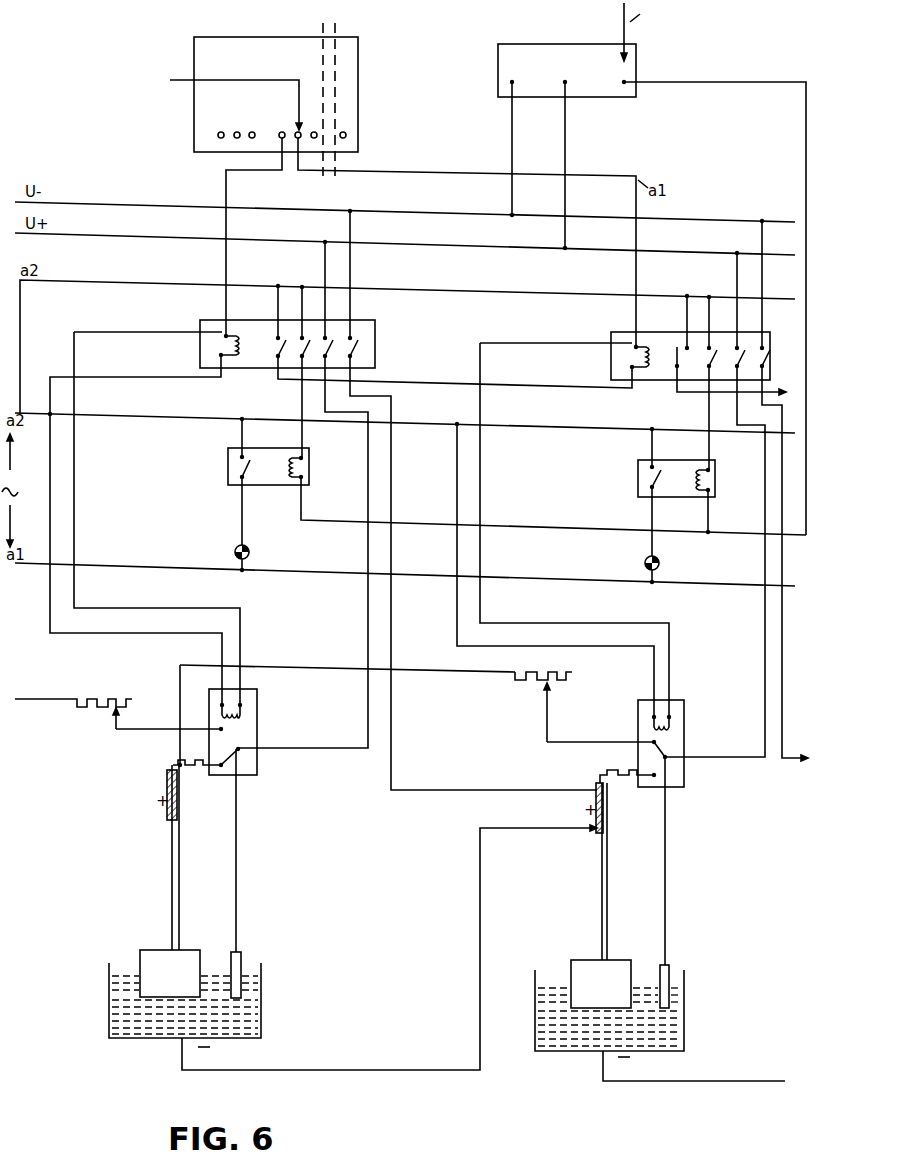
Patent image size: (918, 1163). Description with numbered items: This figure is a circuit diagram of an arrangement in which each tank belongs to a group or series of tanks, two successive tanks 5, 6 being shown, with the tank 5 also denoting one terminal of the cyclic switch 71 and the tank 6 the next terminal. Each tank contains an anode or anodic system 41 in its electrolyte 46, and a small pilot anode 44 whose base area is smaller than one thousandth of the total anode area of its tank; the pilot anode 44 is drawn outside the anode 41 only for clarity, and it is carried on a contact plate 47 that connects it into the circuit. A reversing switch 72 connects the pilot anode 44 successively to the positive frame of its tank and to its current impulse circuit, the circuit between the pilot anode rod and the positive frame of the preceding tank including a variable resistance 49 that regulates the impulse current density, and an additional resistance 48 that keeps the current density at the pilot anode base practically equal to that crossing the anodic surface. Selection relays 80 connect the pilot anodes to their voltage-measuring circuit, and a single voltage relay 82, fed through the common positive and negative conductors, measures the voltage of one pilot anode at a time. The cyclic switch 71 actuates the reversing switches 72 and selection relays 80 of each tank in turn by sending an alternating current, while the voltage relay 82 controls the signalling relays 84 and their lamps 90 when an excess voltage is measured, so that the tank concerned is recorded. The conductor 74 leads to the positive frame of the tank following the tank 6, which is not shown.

The cyclic switch 71 is at (302, 37).
The voltage relay 82 is at (587, 44).
The relay of selection 80 is at (376, 344).
The signalling relay 84 is at (233, 448).
The lamp 90 is at (249, 550).
The reversing switch 72 is at (258, 714).
The variable resistance 49 is at (110, 698).
The additional resistance 48 is at (186, 760).
The contact plate 47 is at (167, 792).
The anode 41 is at (188, 950).
The pilot anode 44 is at (241, 961).
The electrolyte 46 is at (245, 1012).
The tank 5 is at (262, 1027).
The tank 6 is at (685, 1005).
The conductor 74 is at (784, 751).